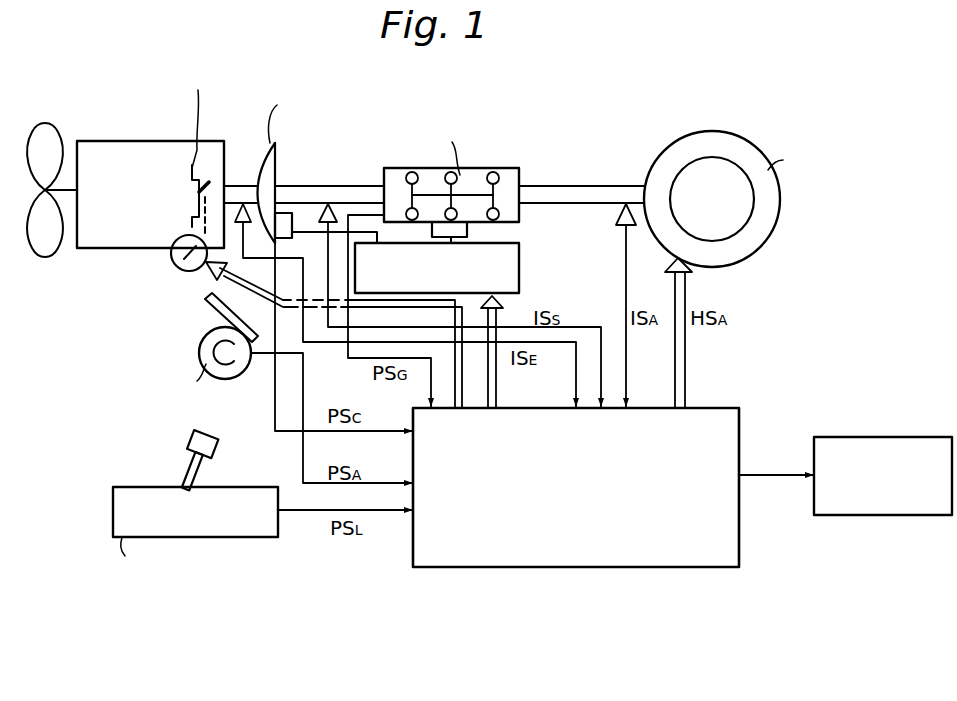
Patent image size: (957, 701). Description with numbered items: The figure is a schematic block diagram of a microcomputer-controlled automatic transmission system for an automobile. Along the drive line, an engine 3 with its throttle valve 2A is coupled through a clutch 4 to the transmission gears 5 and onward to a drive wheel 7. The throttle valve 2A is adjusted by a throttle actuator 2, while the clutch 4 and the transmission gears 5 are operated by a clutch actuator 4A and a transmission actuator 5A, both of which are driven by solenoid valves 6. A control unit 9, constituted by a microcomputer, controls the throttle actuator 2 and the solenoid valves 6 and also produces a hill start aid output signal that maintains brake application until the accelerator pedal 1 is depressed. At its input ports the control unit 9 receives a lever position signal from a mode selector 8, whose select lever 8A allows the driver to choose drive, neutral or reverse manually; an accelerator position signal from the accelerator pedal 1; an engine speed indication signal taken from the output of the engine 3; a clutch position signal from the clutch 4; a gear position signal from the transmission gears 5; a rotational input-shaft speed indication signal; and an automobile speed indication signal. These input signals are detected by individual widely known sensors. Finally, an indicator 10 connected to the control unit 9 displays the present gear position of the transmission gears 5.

The accelerator pedal 1 is at (201, 335).
The throttle actuator 2 is at (173, 263).
The throttle valve 2A is at (193, 168).
The engine 3 is at (157, 141).
The clutch 4 is at (275, 165).
The clutch actuator 4A is at (295, 218).
The transmission gears 5 is at (510, 176).
The transmission actuator 5A is at (467, 231).
The solenoid valves 6 is at (519, 268).
The drive wheel 7 is at (733, 173).
The mode selector 8 is at (113, 510).
The select lever 8A is at (185, 468).
The control unit 9 is at (736, 430).
The indicator 10 is at (898, 440).